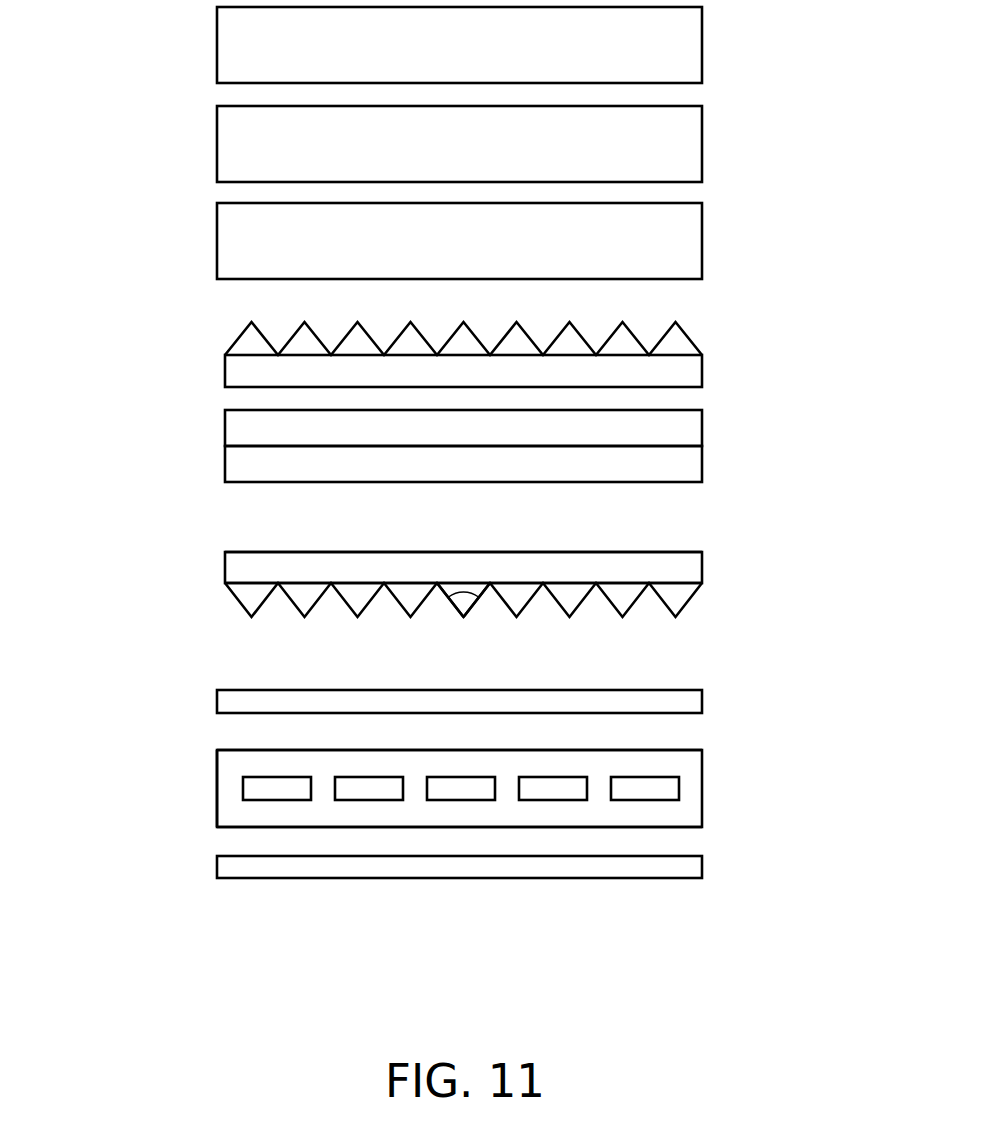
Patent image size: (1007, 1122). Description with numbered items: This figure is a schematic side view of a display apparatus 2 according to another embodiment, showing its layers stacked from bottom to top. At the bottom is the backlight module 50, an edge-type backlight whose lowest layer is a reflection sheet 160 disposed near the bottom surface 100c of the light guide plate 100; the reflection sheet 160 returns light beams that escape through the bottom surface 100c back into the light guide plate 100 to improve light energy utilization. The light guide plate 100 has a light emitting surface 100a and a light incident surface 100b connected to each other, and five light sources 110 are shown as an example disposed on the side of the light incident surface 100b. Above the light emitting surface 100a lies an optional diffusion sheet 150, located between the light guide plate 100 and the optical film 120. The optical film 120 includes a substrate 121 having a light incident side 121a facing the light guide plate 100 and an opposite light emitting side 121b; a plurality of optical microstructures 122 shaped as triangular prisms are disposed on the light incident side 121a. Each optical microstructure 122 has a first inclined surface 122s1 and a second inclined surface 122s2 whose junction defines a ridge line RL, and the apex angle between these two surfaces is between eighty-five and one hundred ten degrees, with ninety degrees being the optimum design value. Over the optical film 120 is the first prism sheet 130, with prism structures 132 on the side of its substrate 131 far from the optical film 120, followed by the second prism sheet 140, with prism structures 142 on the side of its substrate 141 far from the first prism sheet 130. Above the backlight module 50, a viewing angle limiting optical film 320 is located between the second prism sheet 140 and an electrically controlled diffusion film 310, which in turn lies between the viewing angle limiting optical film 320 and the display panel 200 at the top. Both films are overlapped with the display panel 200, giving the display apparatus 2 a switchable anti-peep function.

The display panel 200 is at (673, 47).
The electrically controlled diffusion film 310 is at (673, 145).
The viewing angle limiting optical film 320 is at (673, 242).
The second prism sheet 140 is at (537, 348).
The prism structures 142 is at (683, 344).
The substrate 141 is at (680, 372).
The first prism sheet 130 is at (537, 448).
The prism structures 132 is at (680, 432).
The substrate 131 is at (680, 465).
The optical film 120 is at (537, 601).
The substrate 121 is at (678, 568).
The optical microstructures 122 is at (680, 596).
The light emitting side 121b is at (256, 548).
The light incident side 121a is at (240, 589).
The first inclined surface 122s1 is at (453, 607).
The second inclined surface 122s2 is at (476, 605).
The ridge line RL is at (466, 620).
The diffusion sheet 150 is at (680, 702).
The light guide plate 100 is at (690, 773).
The light source 110 is at (680, 793).
The reflection sheet 160 is at (683, 868).
The light emitting surface 100a is at (255, 748).
The light incident surface 100b is at (256, 760).
The bottom surface 100c is at (253, 830).
The backlight module 50 is at (97, 322).
The display apparatus 2 is at (787, 997).